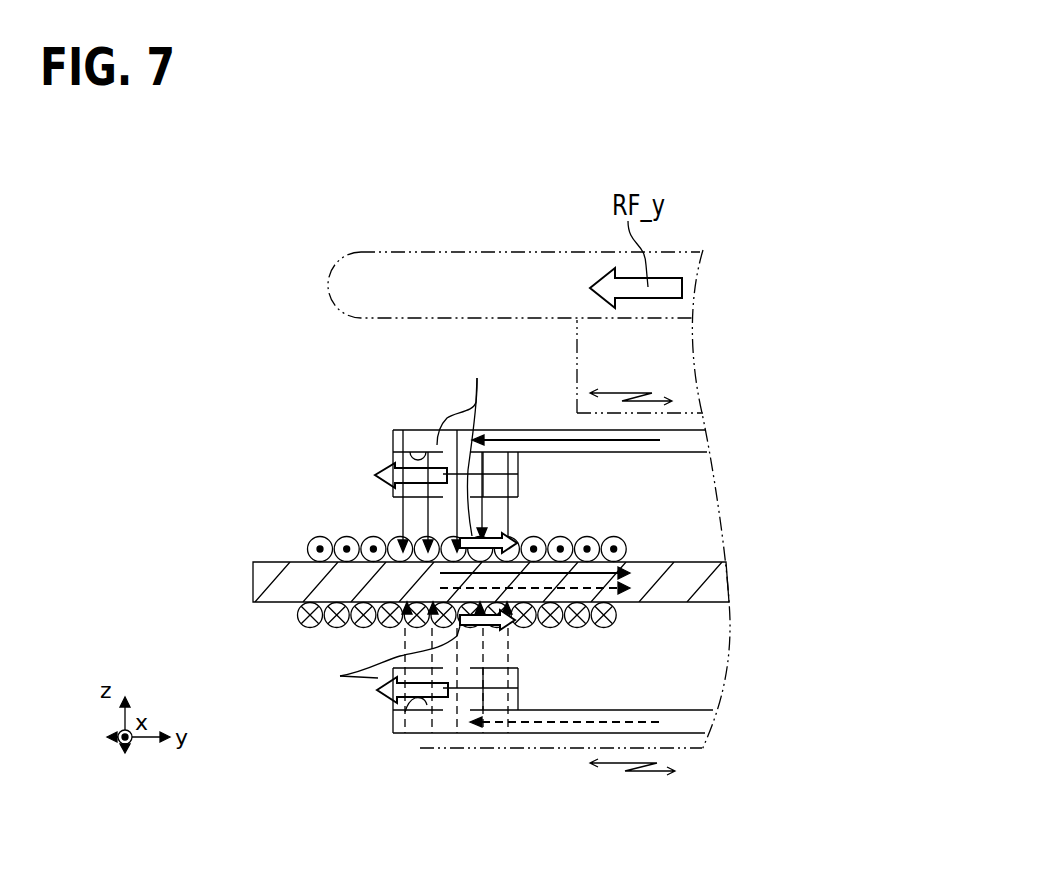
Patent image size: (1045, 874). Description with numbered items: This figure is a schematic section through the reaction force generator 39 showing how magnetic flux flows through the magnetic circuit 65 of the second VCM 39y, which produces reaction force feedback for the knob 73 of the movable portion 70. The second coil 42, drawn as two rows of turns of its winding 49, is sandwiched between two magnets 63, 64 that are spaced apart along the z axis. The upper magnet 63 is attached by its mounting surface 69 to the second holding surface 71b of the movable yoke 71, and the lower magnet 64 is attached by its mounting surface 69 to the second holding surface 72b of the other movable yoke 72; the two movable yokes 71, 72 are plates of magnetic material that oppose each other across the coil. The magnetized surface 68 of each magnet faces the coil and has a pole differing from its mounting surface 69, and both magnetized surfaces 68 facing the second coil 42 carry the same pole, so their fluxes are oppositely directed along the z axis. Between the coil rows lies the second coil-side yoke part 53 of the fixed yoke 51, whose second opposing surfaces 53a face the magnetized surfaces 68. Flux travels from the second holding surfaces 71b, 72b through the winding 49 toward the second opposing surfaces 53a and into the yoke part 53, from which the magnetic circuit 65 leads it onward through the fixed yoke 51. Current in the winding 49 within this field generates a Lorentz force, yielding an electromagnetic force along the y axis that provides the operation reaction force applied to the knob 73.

The movable portion 70 is at (514, 255).
The knob 73 is at (453, 251).
The reaction force generator 39 is at (696, 395).
The second VCM 39y is at (296, 477).
The second coil 42 is at (313, 543).
The winding 49 is at (410, 579).
The second coil-side yoke part 53 is at (467, 570).
The second opposing surface 53a is at (413, 545).
The fixed yoke 51 is at (718, 588).
The magnetic circuit 65 is at (671, 545).
The magnet 63 is at (515, 488).
The magnet 64 is at (515, 678).
The magnetized surface 68 is at (498, 498).
The mounting surface 69 is at (393, 437).
The movable yoke 71 is at (403, 430).
The second holding surface 71b is at (425, 452).
The movable yoke 72 is at (405, 733).
The second holding surface 72b is at (427, 705).